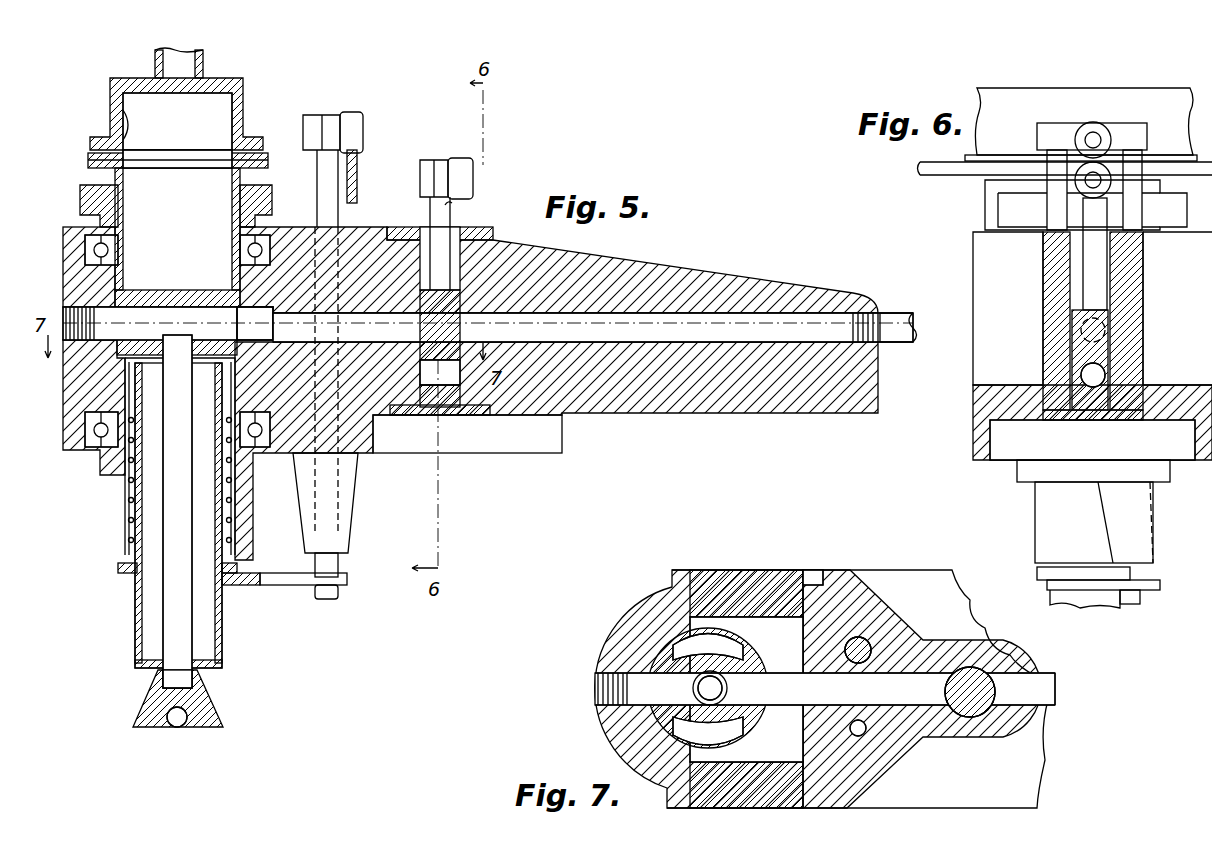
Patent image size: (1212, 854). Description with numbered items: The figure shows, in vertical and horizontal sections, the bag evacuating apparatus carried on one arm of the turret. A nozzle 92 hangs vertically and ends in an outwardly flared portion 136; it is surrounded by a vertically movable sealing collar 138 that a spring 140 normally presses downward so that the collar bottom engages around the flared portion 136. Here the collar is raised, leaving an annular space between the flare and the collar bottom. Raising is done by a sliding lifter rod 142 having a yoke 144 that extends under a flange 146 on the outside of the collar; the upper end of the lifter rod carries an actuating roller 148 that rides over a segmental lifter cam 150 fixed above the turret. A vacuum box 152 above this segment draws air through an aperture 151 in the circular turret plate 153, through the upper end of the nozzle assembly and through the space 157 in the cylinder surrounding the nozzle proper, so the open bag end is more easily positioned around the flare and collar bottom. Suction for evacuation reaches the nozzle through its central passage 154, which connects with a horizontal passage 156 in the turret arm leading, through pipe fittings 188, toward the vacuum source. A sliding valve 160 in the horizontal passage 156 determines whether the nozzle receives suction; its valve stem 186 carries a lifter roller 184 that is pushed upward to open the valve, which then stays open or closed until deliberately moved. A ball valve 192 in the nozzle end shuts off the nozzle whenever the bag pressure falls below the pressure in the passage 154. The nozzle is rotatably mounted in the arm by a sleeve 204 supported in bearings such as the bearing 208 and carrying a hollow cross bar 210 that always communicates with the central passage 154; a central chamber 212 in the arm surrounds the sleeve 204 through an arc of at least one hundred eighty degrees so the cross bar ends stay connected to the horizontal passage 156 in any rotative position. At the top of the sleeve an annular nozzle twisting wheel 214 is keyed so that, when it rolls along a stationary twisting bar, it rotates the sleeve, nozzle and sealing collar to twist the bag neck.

In FIG. 5, the nozzle 92 is at (165, 605).
In FIG. 5, the outwardly flared portion 136 is at (225, 722).
In FIG. 5, the sealing collar 138 is at (140, 650).
In FIG. 6, the sealing collar 138 is at (1076, 608).
In FIG. 7, the sealing collar 138 is at (690, 655).
In FIG. 5, the spring 140 is at (126, 482).
In FIG. 5, the lifter rod 142 is at (330, 225).
In FIG. 6, the lifter rod 142 is at (1135, 178).
In FIG. 7, the lifter rod 142 is at (862, 646).
In FIG. 5, the yoke 144 is at (286, 582).
In FIG. 6, the yoke 144 is at (1150, 596).
In FIG. 5, the flange 146 is at (120, 568).
In FIG. 6, the flange 146 is at (1040, 574).
In FIG. 5, the actuating roller 148 is at (352, 120).
In FIG. 6, the actuating roller 148 is at (1095, 135).
In FIG. 5, the segmental lifter cam 150 is at (358, 176).
In FIG. 5, the aperture 151 is at (128, 125).
In FIG. 5, the vacuum box 152 is at (222, 100).
In FIG. 5, the circular turret plate 153 is at (252, 160).
In FIG. 6, the circular turret plate 153 is at (940, 170).
In FIG. 5, the central passage 154 is at (200, 698).
In FIG. 6, the central passage 154 is at (1030, 100).
In FIG. 7, the central passage 154 is at (725, 690).
In FIG. 5, the horizontal passage 156 is at (732, 330).
In FIG. 6, the horizontal passage 156 is at (1080, 332).
In FIG. 7, the horizontal passage 156 is at (922, 690).
In FIG. 5, the space 157 is at (150, 535).
In FIG. 7, the space 157 is at (720, 718).
In FIG. 5, the sliding valve 160 is at (448, 412).
In FIG. 6, the sliding valve 160 is at (1145, 340).
In FIG. 7, the sliding valve 160 is at (975, 700).
In FIG. 5, the lifter roller 184 is at (475, 160).
In FIG. 6, the lifter roller 184 is at (1085, 165).
In FIG. 5, the valve stem 186 is at (448, 205).
In FIG. 6, the valve stem 186 is at (1095, 268).
In FIG. 5, the pipe fittings 188 is at (880, 318).
In FIG. 5, the ball valve 192 is at (175, 724).
In FIG. 5, the sleeve 204 is at (240, 545).
In FIG. 6, the sleeve 204 is at (1035, 502).
In FIG. 7, the sleeve 204 is at (712, 630).
In FIG. 5, the bearing 208 is at (80, 447).
In FIG. 5, the hollow cross bar 210 is at (192, 290).
In FIG. 7, the hollow cross bar 210 is at (760, 660).
In FIG. 5, the central chamber 212 is at (258, 342).
In FIG. 7, the central chamber 212 is at (778, 615).
In FIG. 5, the nozzle twisting wheel 214 is at (82, 200).
In FIG. 6, the nozzle twisting wheel 214 is at (1005, 205).